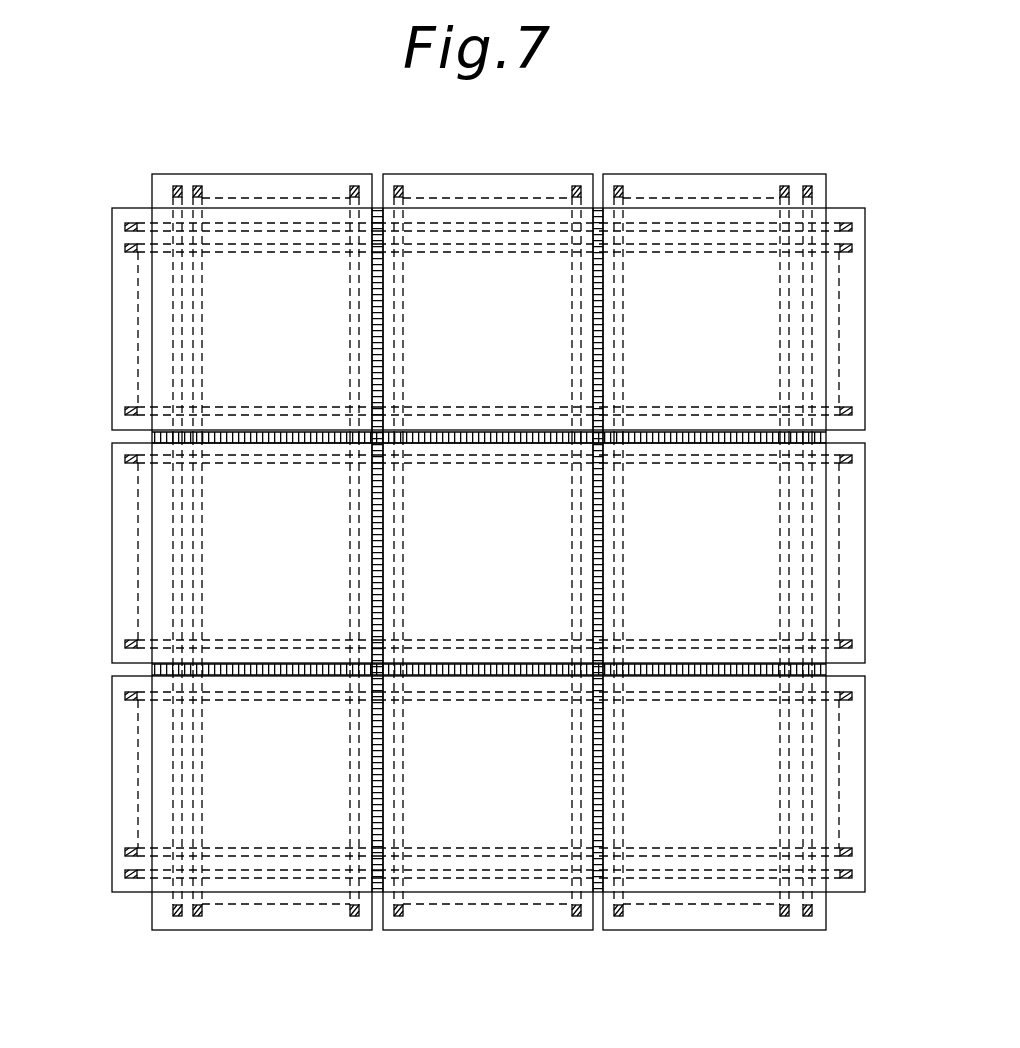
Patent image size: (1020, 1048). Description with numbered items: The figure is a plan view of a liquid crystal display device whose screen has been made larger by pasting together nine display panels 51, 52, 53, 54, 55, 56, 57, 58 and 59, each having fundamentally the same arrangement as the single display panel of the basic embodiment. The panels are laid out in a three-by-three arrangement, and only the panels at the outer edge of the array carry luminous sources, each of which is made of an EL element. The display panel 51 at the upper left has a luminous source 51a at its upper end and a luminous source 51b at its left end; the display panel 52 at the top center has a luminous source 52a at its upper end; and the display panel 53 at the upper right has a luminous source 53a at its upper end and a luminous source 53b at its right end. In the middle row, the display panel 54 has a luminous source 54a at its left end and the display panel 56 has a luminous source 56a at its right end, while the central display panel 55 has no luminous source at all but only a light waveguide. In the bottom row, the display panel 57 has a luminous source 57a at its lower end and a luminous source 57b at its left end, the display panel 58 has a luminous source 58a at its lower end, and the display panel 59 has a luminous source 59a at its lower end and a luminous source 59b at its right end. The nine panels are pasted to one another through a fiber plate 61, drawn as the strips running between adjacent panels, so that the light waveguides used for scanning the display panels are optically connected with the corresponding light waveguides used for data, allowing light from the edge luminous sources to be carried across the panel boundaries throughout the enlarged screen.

The display panel 51 is at (268, 262).
The display panel 52 is at (455, 265).
The display panel 53 is at (658, 265).
The display panel 54 is at (210, 540).
The display panel 55 is at (450, 546).
The display panel 56 is at (765, 525).
The display panel 57 is at (270, 835).
The display panel 58 is at (448, 835).
The display panel 59 is at (690, 835).
The luminous source 51a is at (197, 186).
The luminous source 51b is at (124, 247).
The luminous source 52a is at (398, 186).
The luminous source 53a is at (784, 186).
The luminous source 53b is at (852, 251).
The luminous source 54a is at (123, 458).
The luminous source 56a is at (852, 644).
The luminous source 57a is at (197, 917).
The luminous source 57b is at (123, 852).
The luminous source 58a is at (577, 917).
The luminous source 59a is at (785, 917).
The luminous source 59b is at (852, 852).
The fiber plate 61 is at (152, 437).